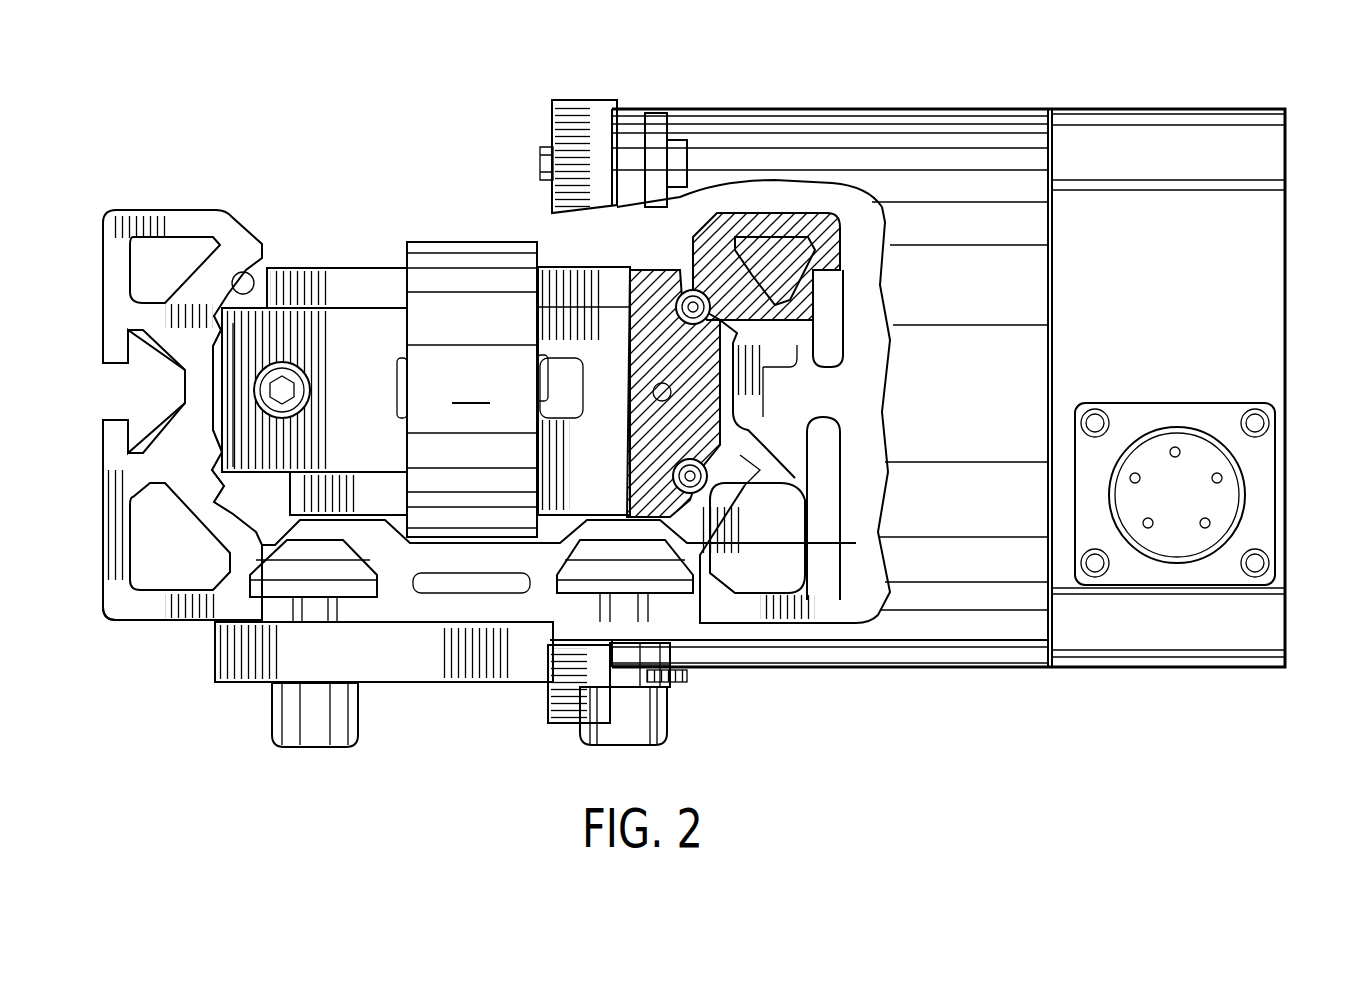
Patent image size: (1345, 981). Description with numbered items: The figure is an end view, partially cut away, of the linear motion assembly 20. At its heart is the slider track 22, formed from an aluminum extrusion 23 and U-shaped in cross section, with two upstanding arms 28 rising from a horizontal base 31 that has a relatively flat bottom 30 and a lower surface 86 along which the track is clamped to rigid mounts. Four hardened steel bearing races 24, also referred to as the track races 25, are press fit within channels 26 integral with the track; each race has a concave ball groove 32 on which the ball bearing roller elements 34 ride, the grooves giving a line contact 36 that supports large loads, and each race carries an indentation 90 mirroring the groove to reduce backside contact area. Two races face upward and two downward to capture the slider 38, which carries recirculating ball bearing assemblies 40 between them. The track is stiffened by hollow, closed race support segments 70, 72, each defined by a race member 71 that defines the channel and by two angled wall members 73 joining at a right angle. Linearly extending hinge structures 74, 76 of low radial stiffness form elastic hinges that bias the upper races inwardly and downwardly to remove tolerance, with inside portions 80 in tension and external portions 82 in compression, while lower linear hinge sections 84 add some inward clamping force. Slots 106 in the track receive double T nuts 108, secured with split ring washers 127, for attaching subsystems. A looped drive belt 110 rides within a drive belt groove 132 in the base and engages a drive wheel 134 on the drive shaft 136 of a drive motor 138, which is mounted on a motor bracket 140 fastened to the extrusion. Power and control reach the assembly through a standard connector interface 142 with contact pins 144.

The linear motion assembly 20 is at (420, 125).
The slider track 22 is at (103, 290).
The aluminum extrusion 23 is at (100, 582).
The bearing races 24 is at (212, 505).
The track races 25 is at (222, 213).
The channels 26 is at (212, 480).
The upstanding arms 28 is at (120, 222).
The flat bottom 30 is at (400, 627).
The horizontal base 31 is at (565, 620).
The ball grooves 32 is at (240, 258).
The ball bearing roller elements 34 is at (635, 302).
The line contact 36 is at (212, 297).
The slider 38 is at (352, 268).
The recirculating ball bearing assemblies 40 is at (570, 290).
The race support segment 70 is at (176, 292).
The race member 71 is at (753, 525).
The race support segment 72 is at (215, 560).
The angled wall members 73 is at (808, 565).
The hinge structure 74 is at (185, 402).
The hinge structure 76 is at (770, 425).
The inside portions 80 is at (265, 380).
The external portions 82 is at (185, 388).
The lower linear hinge sections 84 is at (345, 488).
The lower surface 86 is at (135, 625).
The indentations 90 is at (218, 536).
The slots 106 is at (375, 582).
The double T nuts 108 is at (312, 595).
The drive belt 110 is at (472, 389).
The split ring washers 127 is at (663, 690).
The drive belt groove 132 is at (480, 590).
The drive wheel 134 is at (540, 458).
The drive shaft 136 is at (603, 378).
The drive motor 138 is at (960, 109).
The motor bracket 140 is at (525, 683).
The connector interface 142 is at (1275, 507).
The contact pins 144 is at (1175, 447).